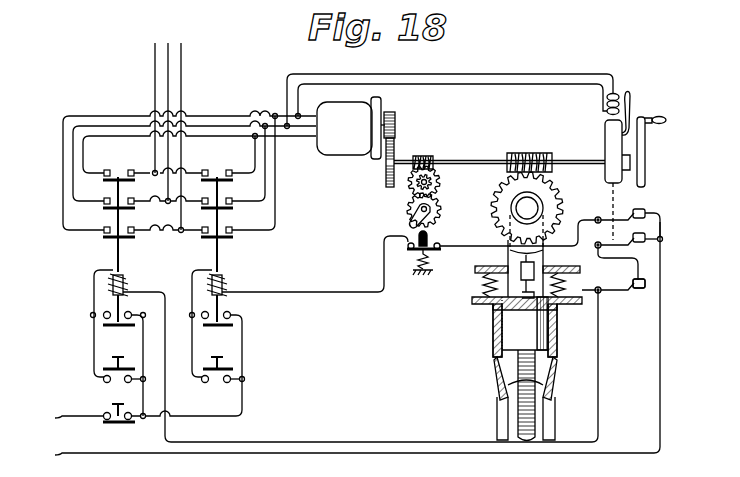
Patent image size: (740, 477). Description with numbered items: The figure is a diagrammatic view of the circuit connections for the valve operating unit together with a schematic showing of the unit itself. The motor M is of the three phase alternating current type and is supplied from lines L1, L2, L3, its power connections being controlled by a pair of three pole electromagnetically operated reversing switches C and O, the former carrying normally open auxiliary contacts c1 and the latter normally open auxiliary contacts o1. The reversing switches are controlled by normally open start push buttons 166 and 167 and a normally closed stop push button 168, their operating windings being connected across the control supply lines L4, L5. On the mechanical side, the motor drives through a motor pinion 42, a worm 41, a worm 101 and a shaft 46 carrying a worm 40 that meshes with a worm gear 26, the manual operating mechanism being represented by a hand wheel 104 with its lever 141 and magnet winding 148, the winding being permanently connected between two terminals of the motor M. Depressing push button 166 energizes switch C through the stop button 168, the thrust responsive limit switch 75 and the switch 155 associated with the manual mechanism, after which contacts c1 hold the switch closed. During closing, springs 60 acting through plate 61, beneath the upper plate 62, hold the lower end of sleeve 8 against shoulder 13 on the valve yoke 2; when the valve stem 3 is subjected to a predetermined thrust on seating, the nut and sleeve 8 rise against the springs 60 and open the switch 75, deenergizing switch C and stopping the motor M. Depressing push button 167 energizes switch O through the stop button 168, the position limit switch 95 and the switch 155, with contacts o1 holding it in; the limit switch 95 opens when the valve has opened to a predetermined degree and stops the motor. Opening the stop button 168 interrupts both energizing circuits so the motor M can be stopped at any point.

The valve yoke 2 is at (493, 330).
The valve stem 3 is at (536, 400).
The sleeve 8 is at (548, 325).
The shoulder 13 is at (500, 353).
The worm gear 26 is at (559, 203).
The worm 40 is at (527, 153).
The worm 41 is at (384, 173).
The motor pinion 42 is at (397, 121).
The shaft 46 is at (470, 160).
The springs 60 is at (480, 286).
The plate 61 is at (472, 301).
The upper plate 62 is at (476, 268).
The thrust responsive limit switch 75 is at (636, 292).
The position limit switch 95 is at (414, 237).
The worm 101 is at (420, 156).
The hand wheel 104 is at (646, 150).
The lever 141 is at (632, 97).
The magnet winding 148 is at (606, 103).
The switch 155 is at (628, 236).
The start push button 166 is at (108, 360).
The start push button 167 is at (232, 366).
The stop push button 168 is at (110, 407).
The reversing switch C is at (117, 168).
The reversing switch O is at (216, 168).
The motor M is at (351, 128).
The auxiliary contacts c1 is at (90, 315).
The auxiliary contacts o1 is at (244, 316).
The supply line L1 is at (155, 44).
The supply line L2 is at (168, 44).
The supply line L3 is at (188, 38).
The supply circuit line L4 is at (66, 416).
The supply circuit line L5 is at (345, 345).